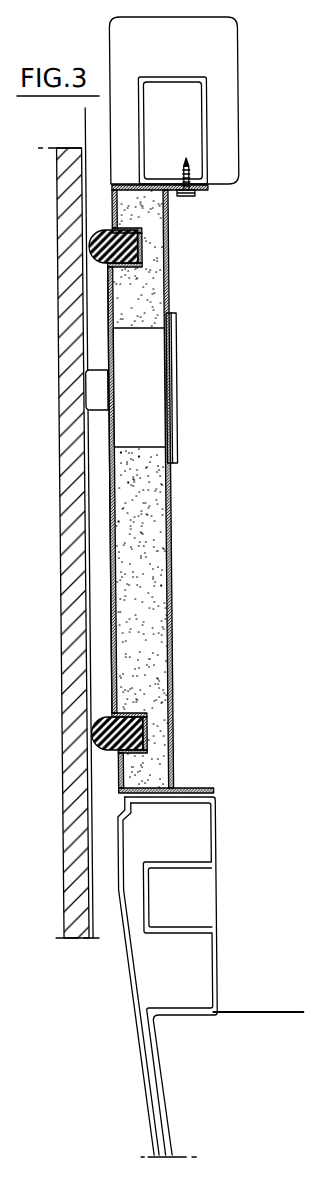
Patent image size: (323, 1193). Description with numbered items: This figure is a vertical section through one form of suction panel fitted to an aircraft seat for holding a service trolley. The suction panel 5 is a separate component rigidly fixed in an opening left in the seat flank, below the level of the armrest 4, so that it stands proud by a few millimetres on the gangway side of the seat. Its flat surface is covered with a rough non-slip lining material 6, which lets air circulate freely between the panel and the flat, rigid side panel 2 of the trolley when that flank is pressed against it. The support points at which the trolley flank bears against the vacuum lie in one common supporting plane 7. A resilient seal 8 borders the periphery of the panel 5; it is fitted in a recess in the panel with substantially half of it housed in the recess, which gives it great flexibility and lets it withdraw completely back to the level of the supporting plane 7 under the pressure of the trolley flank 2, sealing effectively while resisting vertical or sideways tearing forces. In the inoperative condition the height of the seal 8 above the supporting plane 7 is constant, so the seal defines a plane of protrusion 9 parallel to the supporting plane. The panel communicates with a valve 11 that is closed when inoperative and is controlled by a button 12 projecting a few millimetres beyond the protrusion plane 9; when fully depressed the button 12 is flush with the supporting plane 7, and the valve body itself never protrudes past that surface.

The side panel 2 is at (68, 290).
The armrest 4 is at (224, 93).
The suction panel 5 is at (140, 578).
The non-slip lining material 6 is at (109, 637).
The supporting plane 7 is at (106, 583).
The resilient seal 8 is at (91, 733).
The plane of protrusion 9 is at (88, 515).
The valve 11 is at (150, 385).
The button 12 is at (94, 390).